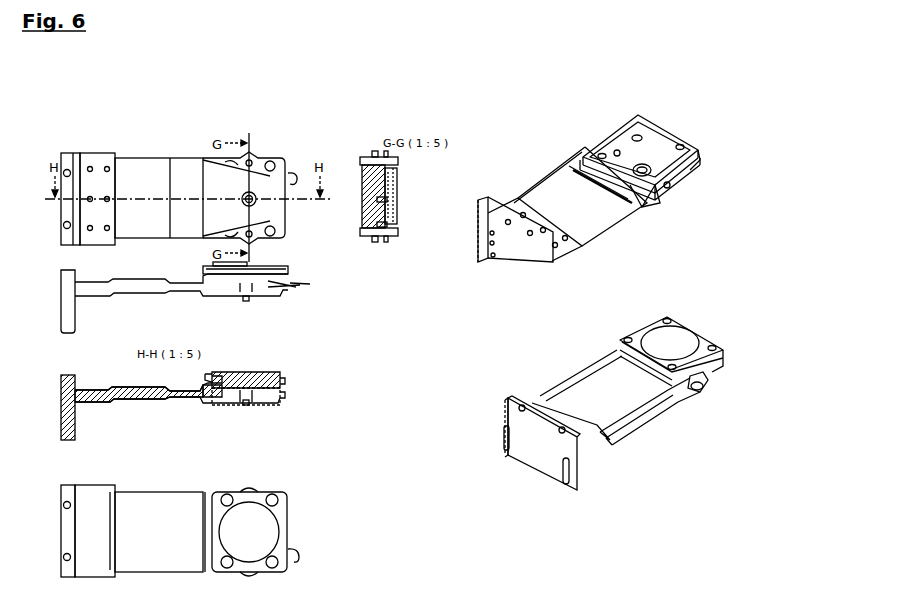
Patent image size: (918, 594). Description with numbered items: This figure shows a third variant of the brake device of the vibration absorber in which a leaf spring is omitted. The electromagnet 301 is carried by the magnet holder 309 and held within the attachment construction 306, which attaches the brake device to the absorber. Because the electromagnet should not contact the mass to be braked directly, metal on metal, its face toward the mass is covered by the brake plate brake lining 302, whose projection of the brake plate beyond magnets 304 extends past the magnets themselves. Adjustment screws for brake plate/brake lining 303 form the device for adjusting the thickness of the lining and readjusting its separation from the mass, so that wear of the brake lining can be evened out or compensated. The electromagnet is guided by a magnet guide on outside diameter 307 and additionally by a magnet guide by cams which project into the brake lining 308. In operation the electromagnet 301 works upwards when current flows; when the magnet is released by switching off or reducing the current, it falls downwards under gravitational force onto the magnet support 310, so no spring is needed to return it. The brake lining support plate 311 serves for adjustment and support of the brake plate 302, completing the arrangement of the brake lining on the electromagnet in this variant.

The electromagnet 301 is at (253, 372).
The brake plate brake lining 302 is at (722, 352).
The adjustment screws for brake plate/brake lining 303 is at (398, 220).
The projection of the brake plate beyond magnets 304 is at (362, 167).
The attachment construction 306 is at (593, 443).
The magnet guide on outside diameter 307 is at (280, 393).
The magnet guide by cams which project into the brake lining 308 is at (700, 343).
The magnet holder 309 is at (637, 417).
The magnet support 310 is at (221, 297).
The brake lining support plate 311 is at (621, 158).